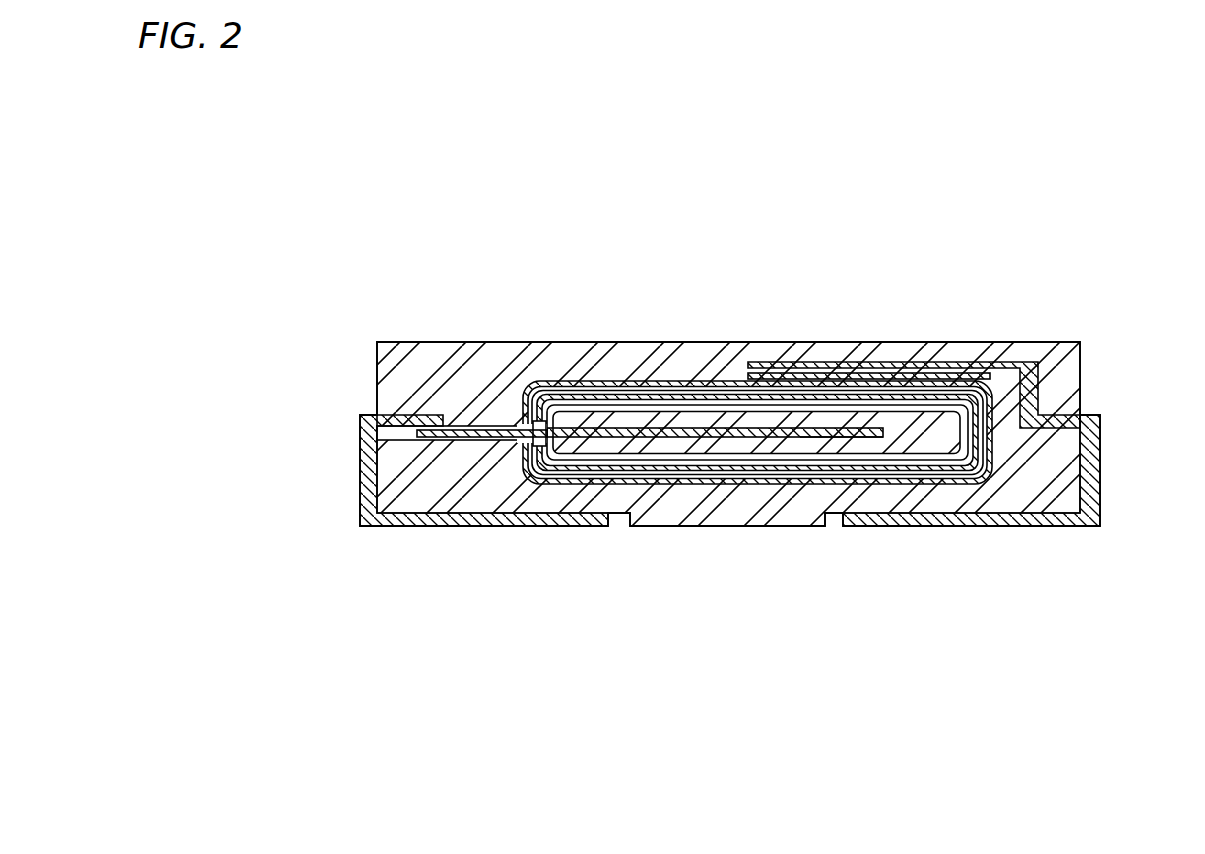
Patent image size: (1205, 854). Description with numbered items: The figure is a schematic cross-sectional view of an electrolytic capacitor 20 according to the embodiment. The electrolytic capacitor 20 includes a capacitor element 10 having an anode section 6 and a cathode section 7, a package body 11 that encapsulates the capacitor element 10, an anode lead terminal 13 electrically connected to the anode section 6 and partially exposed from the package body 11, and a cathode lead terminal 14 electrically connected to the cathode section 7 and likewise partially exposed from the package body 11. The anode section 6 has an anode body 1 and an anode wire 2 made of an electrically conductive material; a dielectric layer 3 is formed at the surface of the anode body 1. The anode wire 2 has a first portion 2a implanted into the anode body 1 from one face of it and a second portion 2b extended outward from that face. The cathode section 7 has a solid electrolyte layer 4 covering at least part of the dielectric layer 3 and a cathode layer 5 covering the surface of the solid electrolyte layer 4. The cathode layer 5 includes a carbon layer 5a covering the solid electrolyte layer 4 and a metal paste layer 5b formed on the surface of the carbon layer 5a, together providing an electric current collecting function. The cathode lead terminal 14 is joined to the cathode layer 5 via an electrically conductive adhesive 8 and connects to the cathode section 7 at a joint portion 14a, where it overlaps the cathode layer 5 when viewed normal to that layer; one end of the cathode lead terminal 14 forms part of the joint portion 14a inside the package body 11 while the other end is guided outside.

The anode body 1 is at (748, 416).
The anode wire 2 is at (724, 429).
The first portion 2a is at (798, 437).
The second portion 2b is at (470, 437).
The dielectric layer 3 is at (668, 406).
The solid electrolyte layer 4 is at (635, 397).
The cathode layer 5 is at (753, 415).
The carbon layer 5a is at (558, 391).
The metal paste layer 5b is at (534, 382).
The anode section 6 is at (757, 415).
The cathode section 7 is at (752, 385).
The electrically conductive adhesive 8 is at (813, 376).
The capacitor element 10 is at (752, 360).
The package body 11 is at (458, 358).
The anode lead terminal 13 is at (368, 486).
The cathode lead terminal 14 is at (1092, 472).
The joint portion 14a is at (905, 366).
The electrolytic capacitor 20 is at (729, 360).